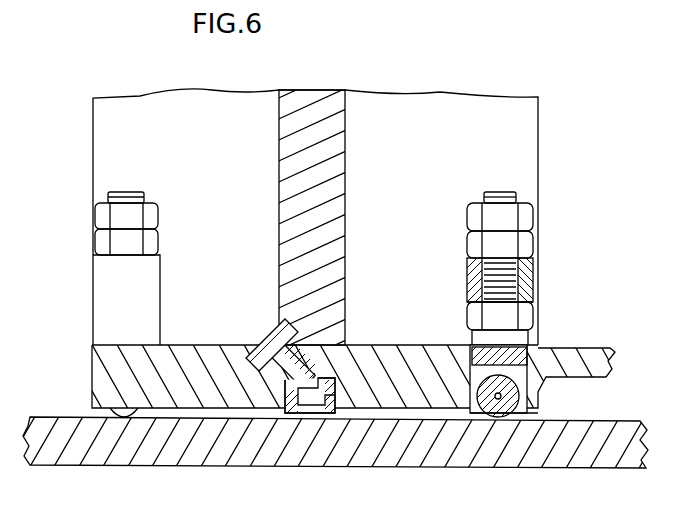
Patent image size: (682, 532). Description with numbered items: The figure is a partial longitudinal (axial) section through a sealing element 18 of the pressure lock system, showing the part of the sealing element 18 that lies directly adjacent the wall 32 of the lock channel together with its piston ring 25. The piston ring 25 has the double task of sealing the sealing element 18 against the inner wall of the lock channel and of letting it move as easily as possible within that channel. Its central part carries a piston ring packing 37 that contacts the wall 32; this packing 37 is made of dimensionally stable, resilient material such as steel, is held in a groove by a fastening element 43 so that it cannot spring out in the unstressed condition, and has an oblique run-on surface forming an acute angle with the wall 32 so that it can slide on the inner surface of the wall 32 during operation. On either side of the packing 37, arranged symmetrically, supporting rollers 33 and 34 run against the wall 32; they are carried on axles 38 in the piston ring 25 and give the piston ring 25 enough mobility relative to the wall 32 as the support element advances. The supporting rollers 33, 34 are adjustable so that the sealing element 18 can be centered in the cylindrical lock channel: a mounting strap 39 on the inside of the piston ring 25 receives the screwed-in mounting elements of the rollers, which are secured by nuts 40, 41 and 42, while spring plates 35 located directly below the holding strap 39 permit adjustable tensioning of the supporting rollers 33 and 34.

The sealing element 18 is at (313, 97).
The piston ring 25 is at (382, 345).
The wall 32 is at (212, 468).
The supporting roller 33 is at (117, 419).
The supporting roller 34 is at (507, 418).
The spring plate 35 is at (528, 305).
The piston ring packing 37 is at (304, 415).
The axle 38 is at (510, 400).
The mounting strap 39 is at (505, 265).
The nut 40 is at (530, 323).
The nut 41 is at (528, 246).
The nut 42 is at (534, 222).
The fastening element 43 is at (270, 343).